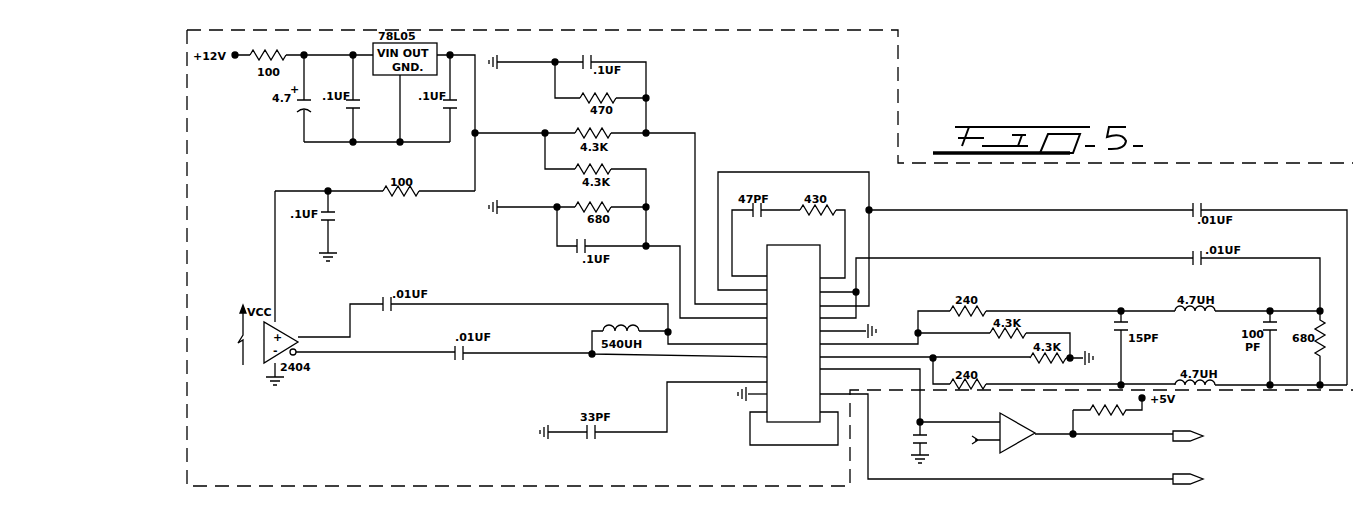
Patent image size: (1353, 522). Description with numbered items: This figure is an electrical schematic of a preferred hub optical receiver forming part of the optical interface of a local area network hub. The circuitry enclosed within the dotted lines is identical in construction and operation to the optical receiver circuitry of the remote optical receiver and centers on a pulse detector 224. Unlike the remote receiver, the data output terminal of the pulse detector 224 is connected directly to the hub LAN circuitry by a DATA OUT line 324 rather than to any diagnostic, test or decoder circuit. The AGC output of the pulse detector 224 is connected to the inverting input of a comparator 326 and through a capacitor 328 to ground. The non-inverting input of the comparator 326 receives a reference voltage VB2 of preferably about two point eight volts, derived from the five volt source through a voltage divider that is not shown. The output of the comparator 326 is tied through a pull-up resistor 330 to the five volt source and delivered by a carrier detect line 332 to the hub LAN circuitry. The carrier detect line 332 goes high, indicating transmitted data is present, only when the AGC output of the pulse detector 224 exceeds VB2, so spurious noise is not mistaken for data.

The pulse detector 224 is at (797, 422).
The DATA OUT line 324 is at (1186, 486).
The comparator 326 is at (1022, 448).
The capacitor 328 is at (928, 440).
The pull-up resistor 330 is at (1105, 416).
The carrier detect line 332 is at (1186, 442).